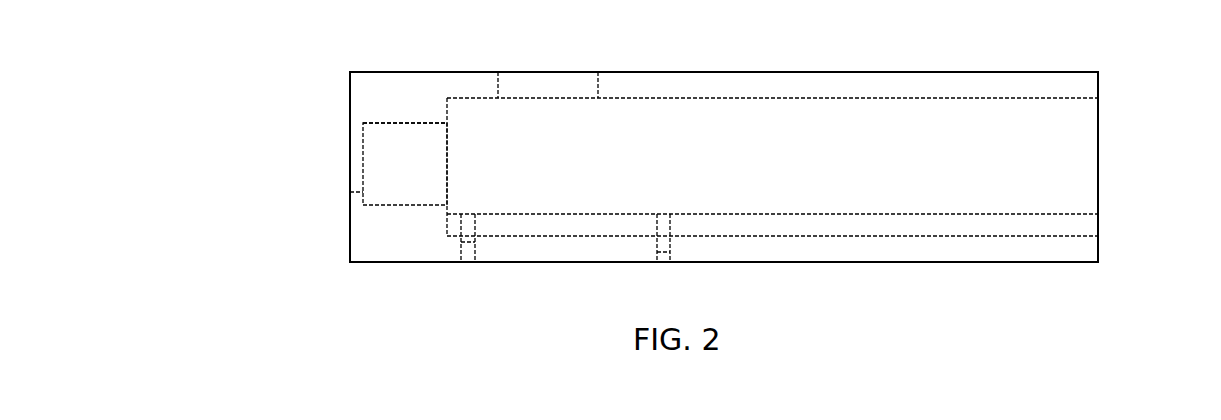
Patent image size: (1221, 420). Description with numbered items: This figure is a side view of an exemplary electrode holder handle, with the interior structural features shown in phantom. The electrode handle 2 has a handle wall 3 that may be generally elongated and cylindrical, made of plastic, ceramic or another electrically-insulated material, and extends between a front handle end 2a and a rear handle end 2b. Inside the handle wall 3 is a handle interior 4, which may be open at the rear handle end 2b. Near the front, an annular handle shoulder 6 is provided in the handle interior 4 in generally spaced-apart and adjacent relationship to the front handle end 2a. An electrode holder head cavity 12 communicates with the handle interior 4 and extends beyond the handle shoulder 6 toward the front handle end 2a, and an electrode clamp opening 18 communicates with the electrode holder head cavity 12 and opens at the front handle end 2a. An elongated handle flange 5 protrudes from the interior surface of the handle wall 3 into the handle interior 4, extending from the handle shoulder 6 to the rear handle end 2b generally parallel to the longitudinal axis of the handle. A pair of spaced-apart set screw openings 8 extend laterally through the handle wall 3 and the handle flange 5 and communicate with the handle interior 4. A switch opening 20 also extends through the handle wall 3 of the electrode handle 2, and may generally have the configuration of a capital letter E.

The electrode handle 2 is at (868, 66).
The front handle end 2a is at (350, 85).
The rear handle end 2b is at (1098, 93).
The handle wall 3 is at (972, 90).
The handle interior 4 is at (1068, 168).
The handle flange 5 is at (908, 226).
The handle shoulder 6 is at (448, 112).
The set screw openings 8 is at (656, 254).
The electrode holder head cavity 12 is at (437, 125).
The electrode clamp opening 18 is at (363, 138).
The switch opening 20 is at (580, 74).